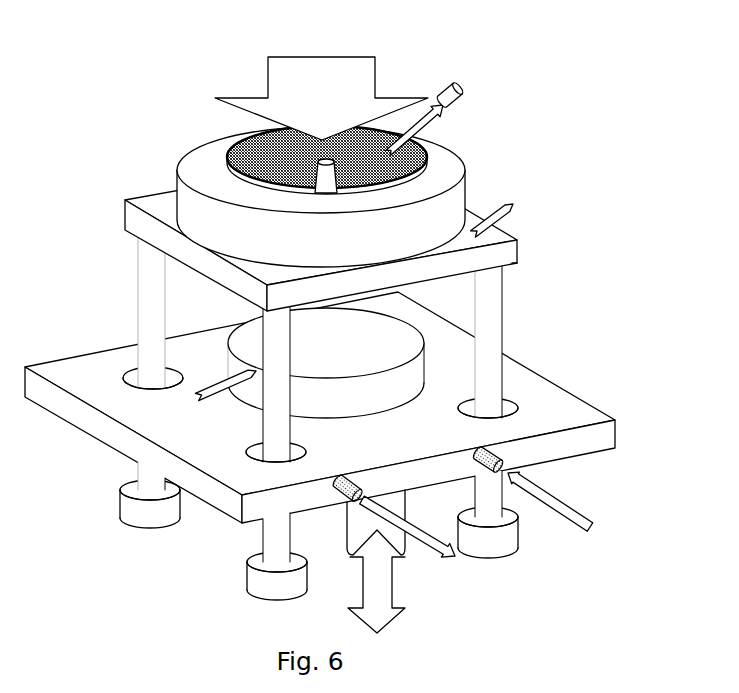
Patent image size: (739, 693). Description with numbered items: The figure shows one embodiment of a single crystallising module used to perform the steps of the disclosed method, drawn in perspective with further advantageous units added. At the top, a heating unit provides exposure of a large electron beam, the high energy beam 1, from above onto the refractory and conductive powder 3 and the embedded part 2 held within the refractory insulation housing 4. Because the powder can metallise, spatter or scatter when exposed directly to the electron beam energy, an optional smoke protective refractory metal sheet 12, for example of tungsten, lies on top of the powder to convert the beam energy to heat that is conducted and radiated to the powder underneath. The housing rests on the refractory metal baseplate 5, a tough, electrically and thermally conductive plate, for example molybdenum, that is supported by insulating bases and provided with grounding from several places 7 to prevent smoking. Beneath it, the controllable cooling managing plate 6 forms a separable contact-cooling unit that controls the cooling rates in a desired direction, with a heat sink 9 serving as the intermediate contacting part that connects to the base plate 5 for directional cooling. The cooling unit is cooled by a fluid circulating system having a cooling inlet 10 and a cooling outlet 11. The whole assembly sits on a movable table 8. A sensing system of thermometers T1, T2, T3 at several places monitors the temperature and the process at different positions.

The high energy beam 1 is at (321, 98).
The embedded part 2 is at (262, 155).
The refractory and conductive powder 3 is at (395, 135).
The refractory insulation housing 4 is at (321, 197).
The refractory metal baseplate 5 is at (321, 233).
The controllable cooling managing plate 6 is at (320, 407).
The grounding from several places 7 is at (511, 265).
The movable table 8 is at (376, 561).
The heat sink 9 is at (326, 363).
The cooling inlet 10 is at (543, 496).
The cooling outlet 11 is at (395, 531).
The smoke protective refractory metal sheet 12 is at (228, 153).
The thermometer T1 is at (435, 114).
The thermometer T2 is at (500, 213).
The thermometer T3 is at (213, 396).